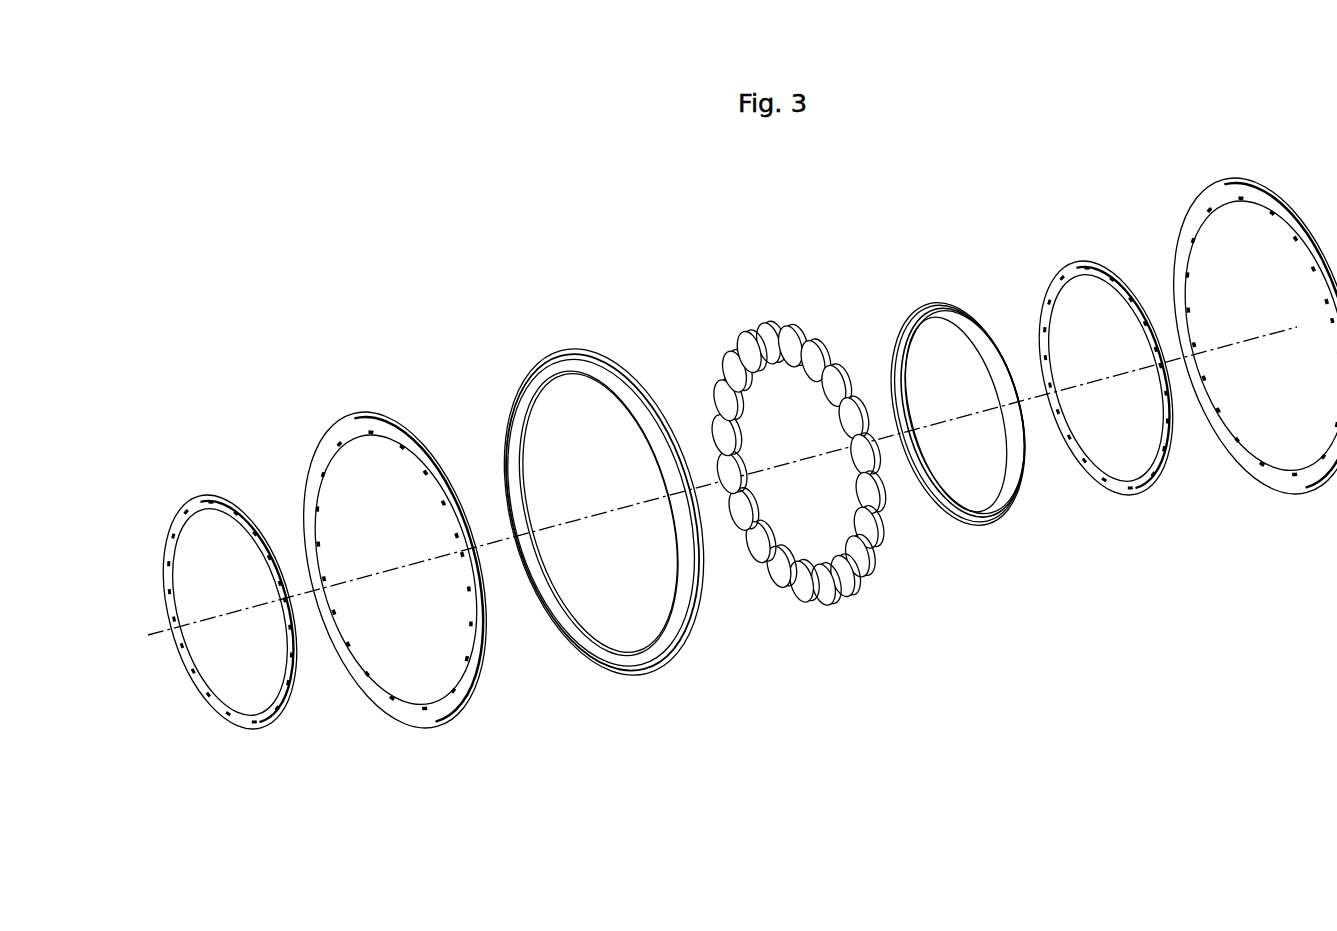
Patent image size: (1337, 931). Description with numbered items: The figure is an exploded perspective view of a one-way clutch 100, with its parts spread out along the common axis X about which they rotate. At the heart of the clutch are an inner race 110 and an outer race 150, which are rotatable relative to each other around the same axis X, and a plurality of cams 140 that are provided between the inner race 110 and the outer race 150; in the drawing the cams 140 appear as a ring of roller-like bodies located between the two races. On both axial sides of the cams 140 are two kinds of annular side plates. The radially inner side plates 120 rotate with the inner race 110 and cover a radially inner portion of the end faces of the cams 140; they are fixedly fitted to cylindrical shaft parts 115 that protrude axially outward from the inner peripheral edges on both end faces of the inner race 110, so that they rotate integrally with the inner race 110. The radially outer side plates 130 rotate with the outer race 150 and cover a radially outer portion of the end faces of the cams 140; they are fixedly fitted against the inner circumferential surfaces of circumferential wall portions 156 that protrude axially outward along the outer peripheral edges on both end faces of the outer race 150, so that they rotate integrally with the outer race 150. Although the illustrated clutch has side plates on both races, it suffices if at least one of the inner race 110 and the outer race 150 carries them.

The one-way clutch 100 is at (822, 778).
The inner race 110 is at (945, 302).
The cylindrical shaft part 115 is at (980, 522).
The radially inner side plate 120 is at (218, 492).
The radially outer side plate 130 is at (370, 410).
The cam 140 is at (774, 326).
The outer race 150 is at (577, 347).
The circumferential wall portion 156 is at (598, 665).
The axis X is at (163, 637).